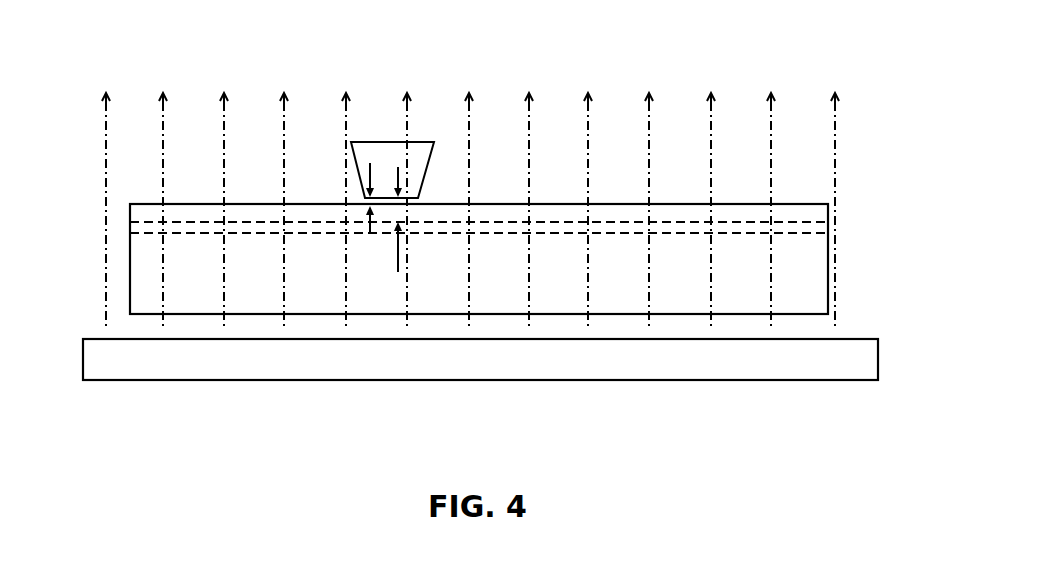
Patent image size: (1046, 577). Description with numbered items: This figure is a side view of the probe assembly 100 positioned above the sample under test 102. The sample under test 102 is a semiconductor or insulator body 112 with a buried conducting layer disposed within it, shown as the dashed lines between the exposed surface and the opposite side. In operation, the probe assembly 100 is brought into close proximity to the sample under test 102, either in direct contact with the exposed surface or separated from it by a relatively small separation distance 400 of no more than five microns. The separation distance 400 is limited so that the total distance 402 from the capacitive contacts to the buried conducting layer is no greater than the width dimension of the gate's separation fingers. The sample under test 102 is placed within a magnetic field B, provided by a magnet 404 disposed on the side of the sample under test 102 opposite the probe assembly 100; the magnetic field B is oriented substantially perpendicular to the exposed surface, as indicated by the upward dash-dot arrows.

The magnetic field B is at (836, 148).
The probe assembly 100 is at (427, 142).
The sample under test 102 is at (830, 258).
The semiconductor or insulator body 112 is at (818, 212).
The separation distance 400 is at (384, 183).
The total distance 402 is at (397, 245).
The magnet 404 is at (764, 381).